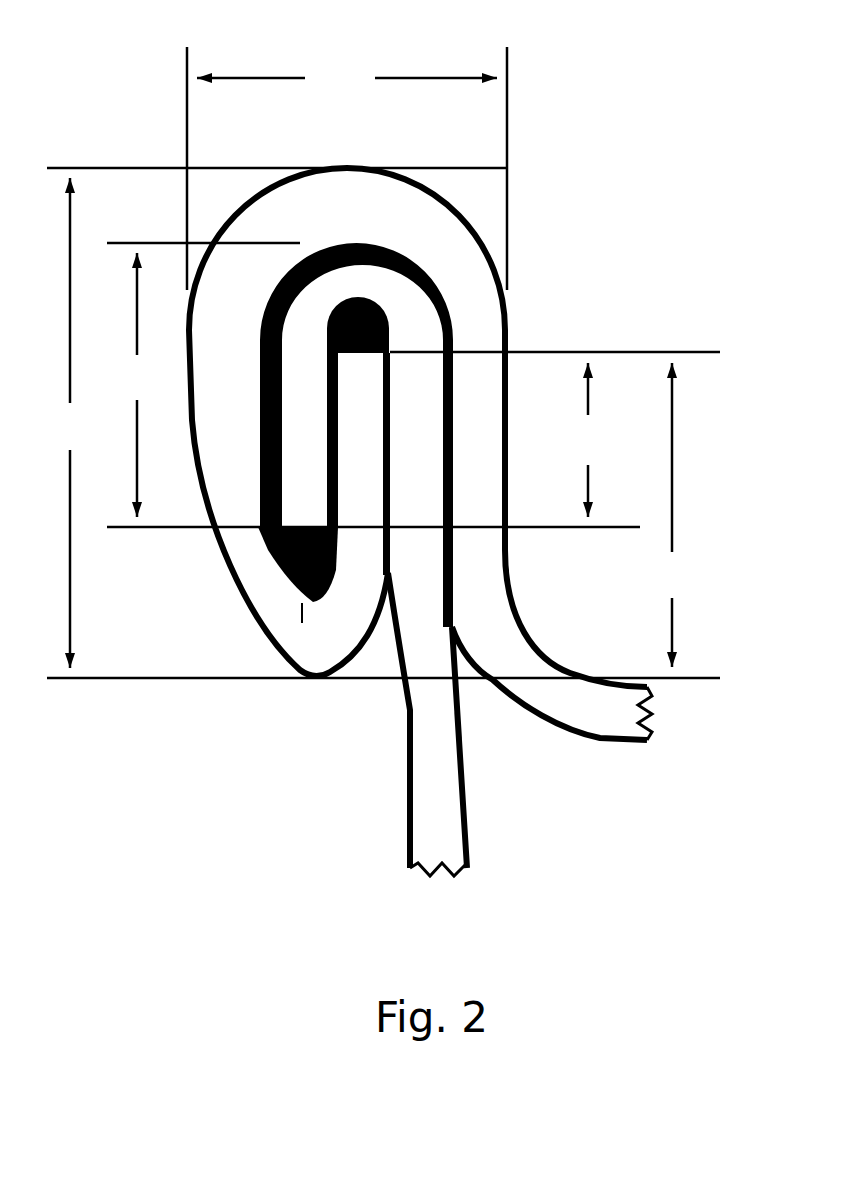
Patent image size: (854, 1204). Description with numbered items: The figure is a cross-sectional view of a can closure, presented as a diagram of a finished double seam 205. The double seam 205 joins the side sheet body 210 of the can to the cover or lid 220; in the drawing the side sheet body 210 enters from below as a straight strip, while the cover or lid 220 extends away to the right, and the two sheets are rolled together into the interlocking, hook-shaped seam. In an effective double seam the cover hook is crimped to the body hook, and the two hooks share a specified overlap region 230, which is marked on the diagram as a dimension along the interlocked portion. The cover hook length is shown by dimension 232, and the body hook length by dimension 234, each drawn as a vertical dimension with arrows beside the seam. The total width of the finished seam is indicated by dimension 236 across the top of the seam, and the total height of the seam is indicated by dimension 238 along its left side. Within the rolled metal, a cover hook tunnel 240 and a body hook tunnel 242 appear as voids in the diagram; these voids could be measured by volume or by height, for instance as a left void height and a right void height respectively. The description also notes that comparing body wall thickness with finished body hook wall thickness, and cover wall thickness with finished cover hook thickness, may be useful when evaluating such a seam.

The finished double seam 205 is at (556, 191).
The side sheet body 210 is at (448, 783).
The cover or lid 220 is at (586, 712).
The overlap region 230 is at (555, 434).
The cover hook length 232 is at (666, 515).
The body hook length 234 is at (373, 385).
The total width of the finished seam 236 is at (347, 168).
The total height of the seam 238 is at (383, 423).
The cover hook tunnel 240 is at (300, 593).
The body hook tunnel 242 is at (388, 323).